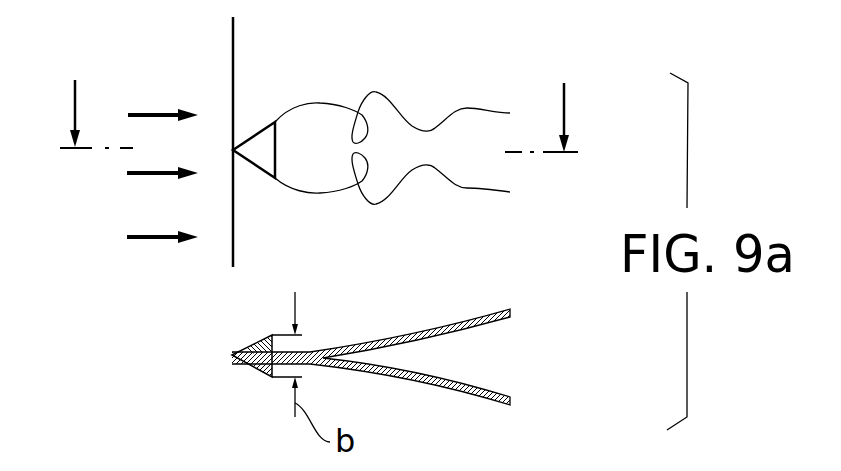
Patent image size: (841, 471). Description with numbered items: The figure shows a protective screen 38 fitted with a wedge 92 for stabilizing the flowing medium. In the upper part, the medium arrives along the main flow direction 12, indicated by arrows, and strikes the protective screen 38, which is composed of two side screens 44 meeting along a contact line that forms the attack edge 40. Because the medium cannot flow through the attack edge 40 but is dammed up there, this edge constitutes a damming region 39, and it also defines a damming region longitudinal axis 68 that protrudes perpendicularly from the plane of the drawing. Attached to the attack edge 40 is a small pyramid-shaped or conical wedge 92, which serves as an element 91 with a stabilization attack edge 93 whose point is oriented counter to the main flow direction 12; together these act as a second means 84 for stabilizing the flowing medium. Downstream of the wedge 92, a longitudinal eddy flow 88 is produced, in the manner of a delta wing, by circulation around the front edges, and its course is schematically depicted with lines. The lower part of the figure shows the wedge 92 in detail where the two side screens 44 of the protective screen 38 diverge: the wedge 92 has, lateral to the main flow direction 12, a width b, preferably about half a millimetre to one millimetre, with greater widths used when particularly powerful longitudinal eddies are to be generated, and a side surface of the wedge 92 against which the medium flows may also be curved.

The main flow direction 12 is at (152, 113).
The protective screen 38 is at (457, 322).
The damming region 39 is at (132, 142).
The attack edge 40 is at (132, 142).
The side screen 44 is at (370, 360).
The damming region longitudinal axis 68 is at (231, 80).
The second means for stabilizing the flowing medium 84 is at (258, 147).
The longitudinal eddy flow 88 is at (477, 94).
The element with a stabilization attack edge 91 is at (323, 100).
The wedge 92 is at (258, 372).
The stabilization attack edge 93 is at (231, 356).